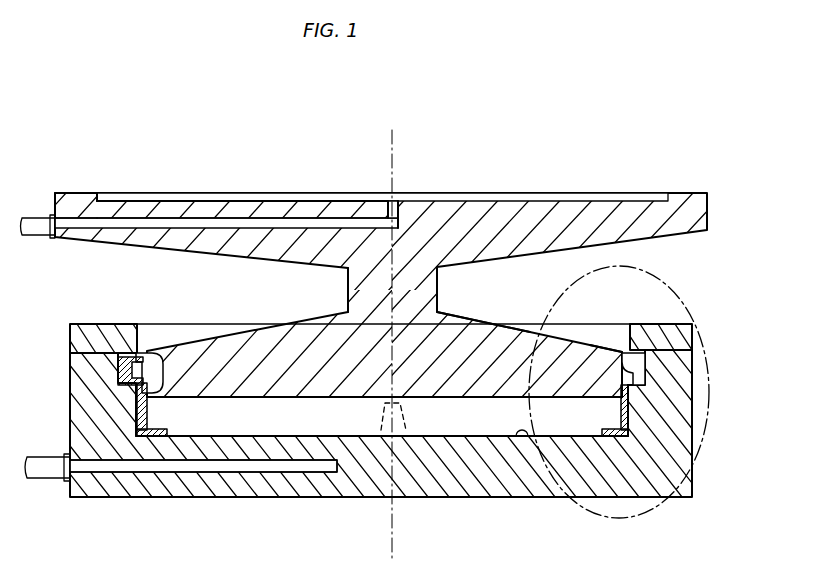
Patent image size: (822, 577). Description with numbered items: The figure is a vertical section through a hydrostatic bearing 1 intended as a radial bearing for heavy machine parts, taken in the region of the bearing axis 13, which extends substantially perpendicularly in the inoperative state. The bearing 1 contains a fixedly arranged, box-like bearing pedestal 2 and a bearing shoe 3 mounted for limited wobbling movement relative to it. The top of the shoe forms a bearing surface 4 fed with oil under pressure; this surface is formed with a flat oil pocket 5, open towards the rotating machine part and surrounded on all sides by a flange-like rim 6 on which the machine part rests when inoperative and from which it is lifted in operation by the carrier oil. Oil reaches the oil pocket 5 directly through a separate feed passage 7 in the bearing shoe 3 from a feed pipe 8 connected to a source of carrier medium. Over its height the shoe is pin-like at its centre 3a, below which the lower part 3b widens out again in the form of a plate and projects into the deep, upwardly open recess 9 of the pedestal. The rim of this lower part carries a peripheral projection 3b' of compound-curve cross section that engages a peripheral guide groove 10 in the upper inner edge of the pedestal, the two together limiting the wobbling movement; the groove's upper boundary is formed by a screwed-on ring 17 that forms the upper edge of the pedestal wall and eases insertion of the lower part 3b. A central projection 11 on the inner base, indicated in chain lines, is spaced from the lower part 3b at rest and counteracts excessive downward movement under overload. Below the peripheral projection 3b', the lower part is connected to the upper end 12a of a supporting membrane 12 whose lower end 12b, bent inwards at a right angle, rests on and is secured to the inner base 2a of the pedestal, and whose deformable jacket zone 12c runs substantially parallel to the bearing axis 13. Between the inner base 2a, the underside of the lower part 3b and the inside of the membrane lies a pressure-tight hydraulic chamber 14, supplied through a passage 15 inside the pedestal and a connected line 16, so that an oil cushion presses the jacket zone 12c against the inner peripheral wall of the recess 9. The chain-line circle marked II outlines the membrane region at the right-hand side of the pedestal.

The hydrostatic bearing 1 is at (538, 182).
The bearing pedestal 2 is at (70, 380).
The inner base 2a is at (521, 438).
The bearing shoe 3 is at (690, 193).
The centre 3a is at (355, 290).
The lower part 3b is at (483, 313).
The peripheral projection 3b' is at (624, 325).
The bearing surface 4 is at (464, 192).
The oil pocket 5 is at (286, 201).
The flange-like rim 6 is at (78, 194).
The feed passage 7 is at (177, 222).
The feed pipe 8 is at (40, 222).
The recess 9 is at (158, 386).
The peripheral guide groove 10 is at (641, 358).
The central projection 11 is at (410, 421).
The supporting membrane 12 is at (618, 403).
The upper end 12a is at (621, 385).
The lower end 12b is at (624, 438).
The deformable jacket zone 12c is at (634, 406).
The bearing axis 13 is at (392, 162).
The hydraulic chamber 14 is at (474, 417).
The passage 15 is at (196, 463).
The line 16 is at (48, 463).
The ring 17 is at (96, 336).
The detail II is at (642, 518).